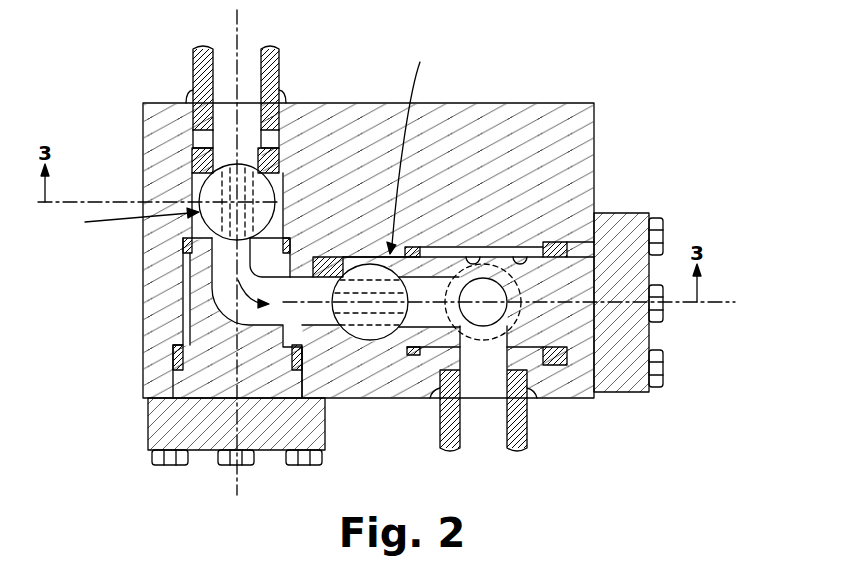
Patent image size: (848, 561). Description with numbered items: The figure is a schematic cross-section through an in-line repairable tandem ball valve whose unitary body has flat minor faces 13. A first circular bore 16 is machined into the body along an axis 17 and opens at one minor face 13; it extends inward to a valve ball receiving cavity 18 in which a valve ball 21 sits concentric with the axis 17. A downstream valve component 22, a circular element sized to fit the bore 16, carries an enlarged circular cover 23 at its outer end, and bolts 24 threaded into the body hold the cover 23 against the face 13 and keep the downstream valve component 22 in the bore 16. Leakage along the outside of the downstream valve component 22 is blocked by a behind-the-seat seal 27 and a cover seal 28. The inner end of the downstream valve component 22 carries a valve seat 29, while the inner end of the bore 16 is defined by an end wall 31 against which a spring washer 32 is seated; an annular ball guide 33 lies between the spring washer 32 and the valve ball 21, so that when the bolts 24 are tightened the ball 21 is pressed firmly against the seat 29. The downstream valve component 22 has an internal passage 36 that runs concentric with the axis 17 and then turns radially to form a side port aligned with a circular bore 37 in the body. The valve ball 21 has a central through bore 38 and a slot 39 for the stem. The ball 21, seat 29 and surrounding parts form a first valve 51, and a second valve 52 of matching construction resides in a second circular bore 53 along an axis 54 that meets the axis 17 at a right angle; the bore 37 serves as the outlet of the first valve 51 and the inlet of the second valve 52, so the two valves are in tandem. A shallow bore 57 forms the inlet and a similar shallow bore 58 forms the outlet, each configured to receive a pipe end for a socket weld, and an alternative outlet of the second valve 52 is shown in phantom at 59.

The minor faces 13 is at (386, 400).
The first circular bore 16 is at (192, 318).
The axis 17 is at (232, 62).
The valve ball receiving cavity 18 is at (195, 176).
The valve ball 21 is at (212, 230).
The downstream valve component 22 is at (203, 300).
The cover 23 is at (147, 430).
The bolts 24 is at (170, 466).
The behind the seat seal 27 is at (215, 244).
The cover seal 28 is at (175, 358).
The valve seat 29 is at (208, 262).
The end wall 31 is at (195, 165).
The spring washer 32 is at (279, 168).
The ball guide 33 is at (343, 337).
The internal passage 36 is at (327, 257).
The circular bore 37 is at (320, 335).
The central through bore 38 is at (192, 150).
The slot 39 is at (205, 140).
The first valve 51 is at (161, 258).
The second valve 52 is at (448, 263).
The second circular bore 53 is at (530, 247).
The axis 54 is at (710, 303).
The shallow bore 57 is at (223, 118).
The shallow bore 58 is at (447, 382).
The alternative outlet 59 is at (523, 315).